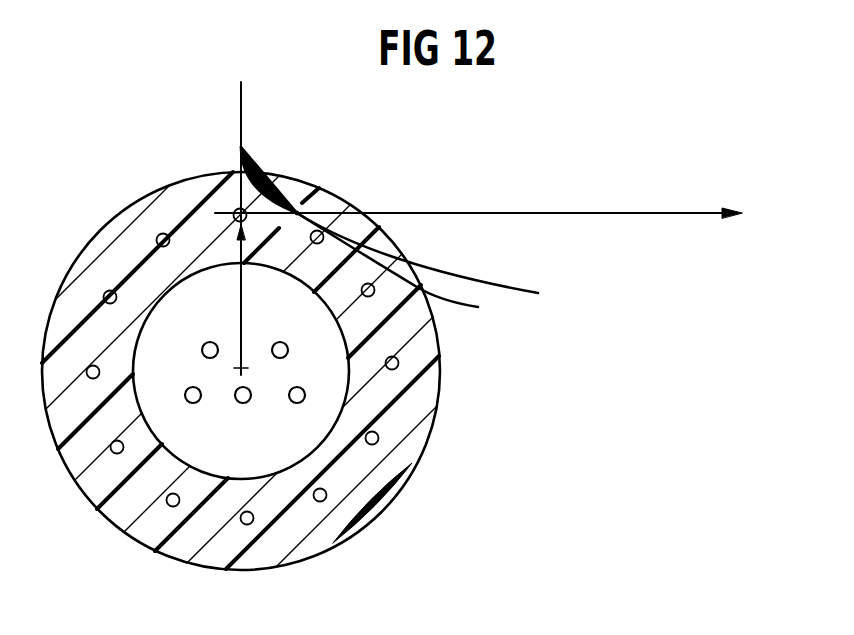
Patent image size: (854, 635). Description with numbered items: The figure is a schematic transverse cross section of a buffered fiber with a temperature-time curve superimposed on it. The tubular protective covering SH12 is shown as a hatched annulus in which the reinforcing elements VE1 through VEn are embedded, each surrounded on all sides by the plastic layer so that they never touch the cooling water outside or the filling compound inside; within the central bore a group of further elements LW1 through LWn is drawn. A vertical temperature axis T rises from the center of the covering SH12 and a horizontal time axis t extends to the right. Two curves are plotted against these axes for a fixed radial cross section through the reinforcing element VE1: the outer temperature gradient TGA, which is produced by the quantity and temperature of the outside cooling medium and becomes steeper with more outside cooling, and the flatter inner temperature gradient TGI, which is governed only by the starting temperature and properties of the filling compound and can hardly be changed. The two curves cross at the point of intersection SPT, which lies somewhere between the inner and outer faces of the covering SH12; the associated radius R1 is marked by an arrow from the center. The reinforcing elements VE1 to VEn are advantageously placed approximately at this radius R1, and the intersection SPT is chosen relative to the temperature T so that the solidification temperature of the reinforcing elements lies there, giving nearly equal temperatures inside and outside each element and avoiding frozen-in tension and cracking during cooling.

The protective covering SH12 is at (417, 444).
The reinforcing element VE1 is at (238, 209).
The reinforcing element VEn is at (162, 233).
The first central opening LW1 is at (238, 401).
The n-th central opening LWn is at (298, 403).
The temperature T is at (246, 225).
The time axis t is at (486, 211).
The radius R1 is at (240, 278).
The inner temperature gradient TGI is at (492, 285).
The outer temperature gradient TGA is at (447, 302).
The point of intersection SPT is at (300, 210).